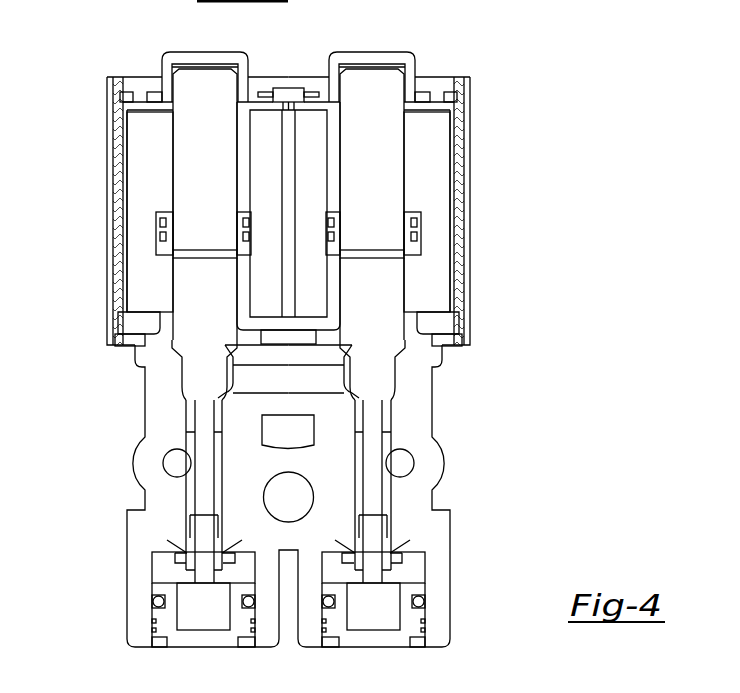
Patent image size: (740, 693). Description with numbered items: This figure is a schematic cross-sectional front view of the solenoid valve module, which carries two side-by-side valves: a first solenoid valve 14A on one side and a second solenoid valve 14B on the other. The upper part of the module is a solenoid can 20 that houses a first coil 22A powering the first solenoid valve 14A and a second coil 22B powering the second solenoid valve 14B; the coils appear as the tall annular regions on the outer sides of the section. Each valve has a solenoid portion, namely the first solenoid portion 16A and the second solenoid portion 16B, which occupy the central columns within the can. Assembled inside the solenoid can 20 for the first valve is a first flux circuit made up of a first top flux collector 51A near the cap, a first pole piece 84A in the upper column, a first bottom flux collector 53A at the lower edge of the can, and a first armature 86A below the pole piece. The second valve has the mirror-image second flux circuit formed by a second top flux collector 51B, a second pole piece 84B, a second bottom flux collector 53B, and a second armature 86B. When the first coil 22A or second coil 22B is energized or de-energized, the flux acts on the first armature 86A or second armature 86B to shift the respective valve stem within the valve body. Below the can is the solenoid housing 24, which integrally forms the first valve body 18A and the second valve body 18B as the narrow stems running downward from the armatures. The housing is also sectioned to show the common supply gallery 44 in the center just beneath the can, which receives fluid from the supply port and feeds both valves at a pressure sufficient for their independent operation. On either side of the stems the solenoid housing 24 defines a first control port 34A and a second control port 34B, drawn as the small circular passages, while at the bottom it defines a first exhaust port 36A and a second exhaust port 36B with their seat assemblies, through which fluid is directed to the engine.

The first solenoid valve 14A is at (160, 42).
The second solenoid valve 14B is at (418, 42).
The first top flux collector 51A is at (158, 92).
The second top flux collector 51B is at (420, 92).
The first pole piece 84A is at (197, 120).
The second pole piece 84B is at (378, 120).
The first coil 22A is at (135, 145).
The second coil 22B is at (440, 145).
The solenoid can 20 is at (107, 190).
The first solenoid portion 16A is at (216, 185).
The second solenoid portion 16B is at (385, 185).
The first armature 86A is at (197, 302).
The second armature 86B is at (378, 302).
The first bottom flux collector 53A is at (125, 342).
The second bottom flux collector 53B is at (455, 342).
The supply gallery 44 is at (185, 386).
The first valve body 18A is at (190, 424).
The second valve body 18B is at (388, 424).
The first control port 34A is at (177, 466).
The second control port 34B is at (400, 466).
The solenoid housing 24 is at (160, 504).
The first exhaust port 36A is at (168, 570).
The second exhaust port 36B is at (410, 570).